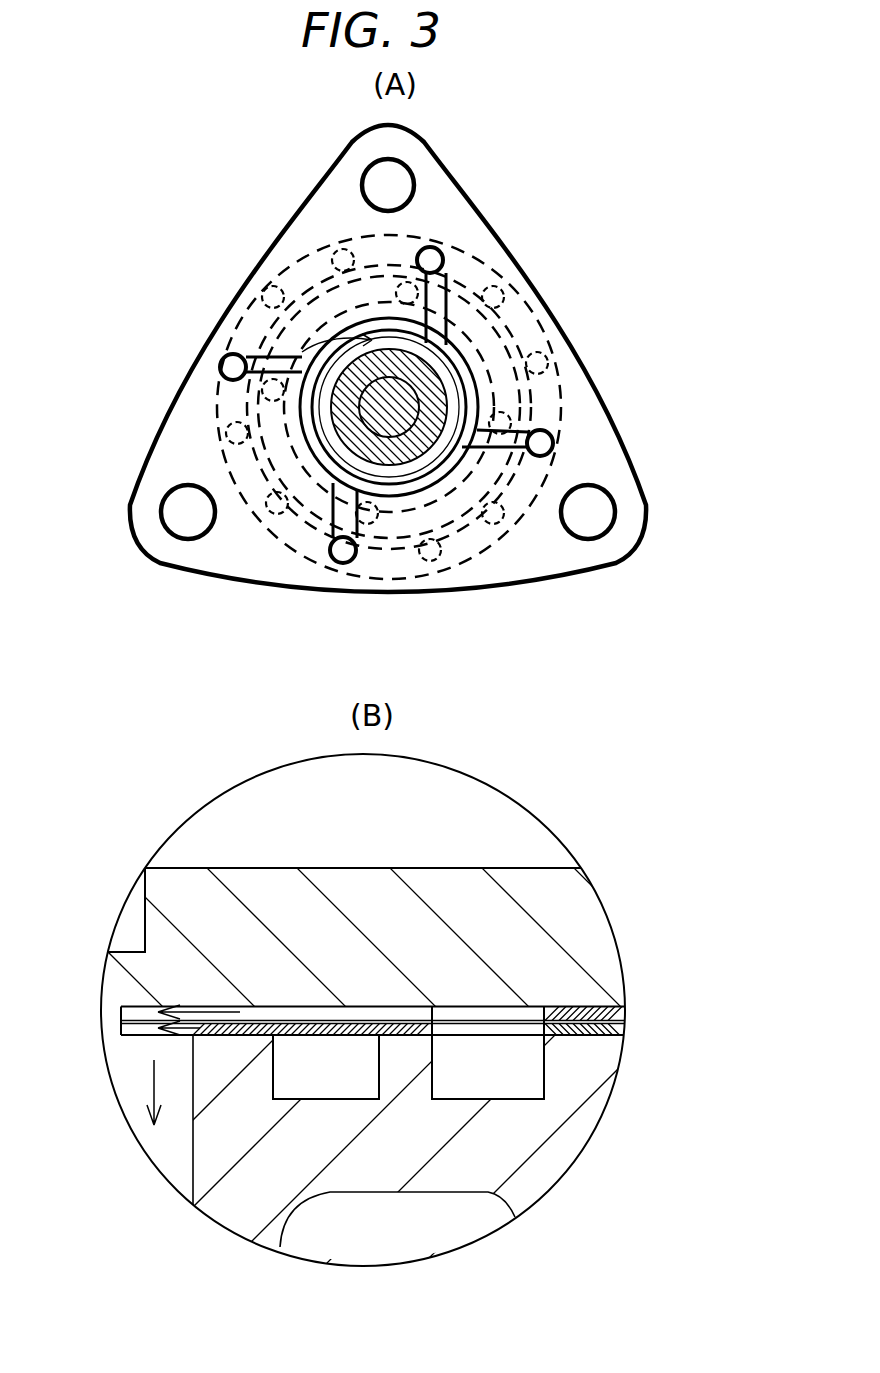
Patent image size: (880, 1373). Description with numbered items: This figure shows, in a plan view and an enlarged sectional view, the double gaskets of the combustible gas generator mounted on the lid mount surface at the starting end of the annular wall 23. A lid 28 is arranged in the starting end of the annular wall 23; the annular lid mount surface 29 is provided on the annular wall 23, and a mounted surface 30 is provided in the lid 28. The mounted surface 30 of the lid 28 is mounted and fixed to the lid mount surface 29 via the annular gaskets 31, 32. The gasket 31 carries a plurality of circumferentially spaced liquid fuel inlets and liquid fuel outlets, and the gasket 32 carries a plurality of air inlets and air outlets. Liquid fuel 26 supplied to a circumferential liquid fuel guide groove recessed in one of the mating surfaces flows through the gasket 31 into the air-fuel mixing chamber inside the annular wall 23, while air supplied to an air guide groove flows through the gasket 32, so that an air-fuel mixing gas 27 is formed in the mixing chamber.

The annular wall 23 is at (582, 1080).
The liquid fuel 26 is at (163, 1028).
The air-fuel mixing gas 27 is at (135, 1090).
The lid 28 is at (562, 882).
The lid mount surface 29 is at (597, 1035).
The mounted surface 30 is at (587, 1007).
The gasket 31 is at (630, 1025).
The gasket 32 is at (630, 1007).